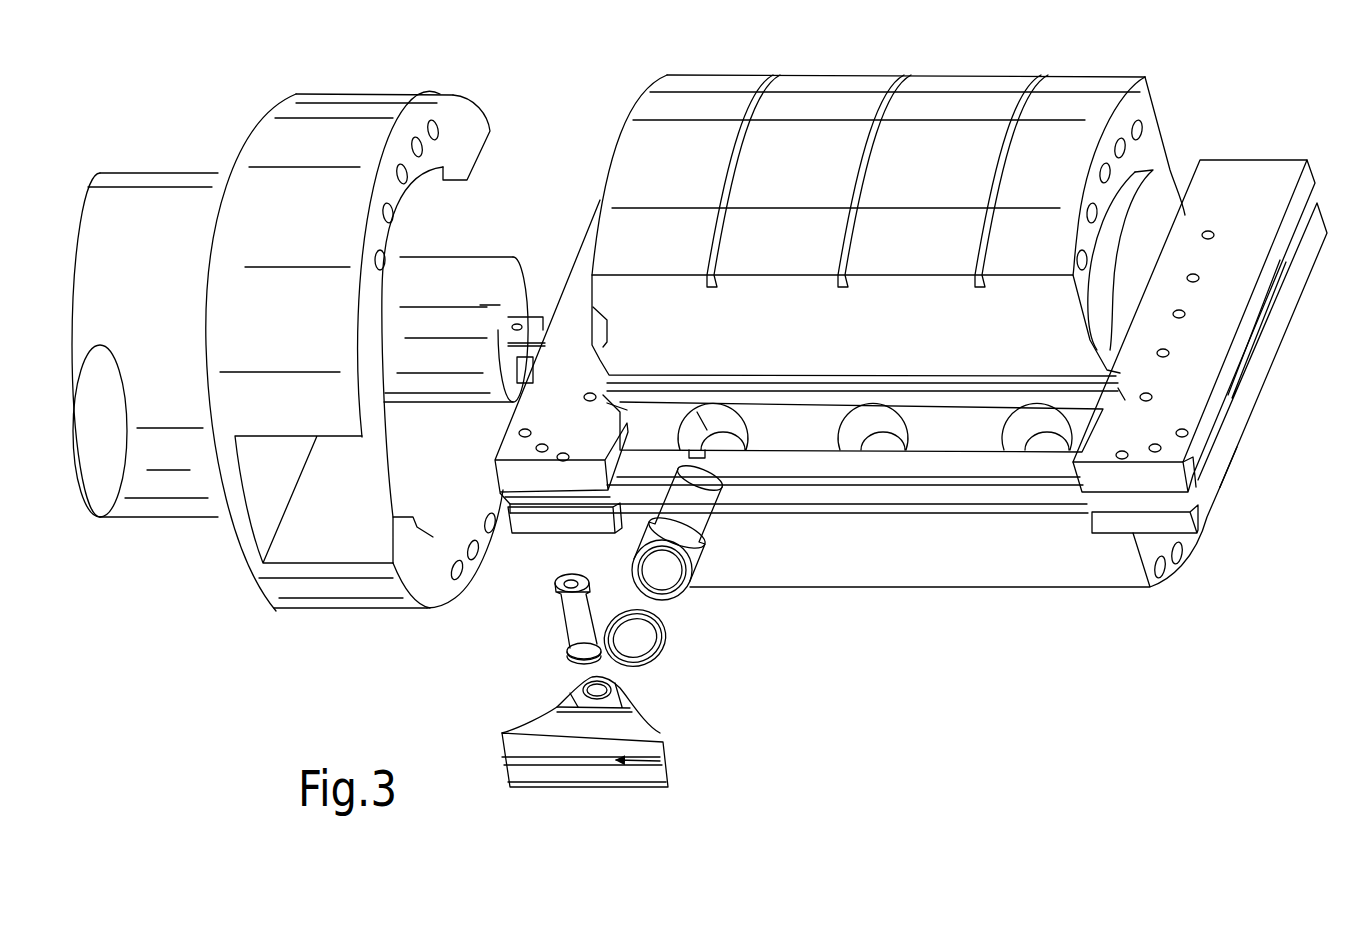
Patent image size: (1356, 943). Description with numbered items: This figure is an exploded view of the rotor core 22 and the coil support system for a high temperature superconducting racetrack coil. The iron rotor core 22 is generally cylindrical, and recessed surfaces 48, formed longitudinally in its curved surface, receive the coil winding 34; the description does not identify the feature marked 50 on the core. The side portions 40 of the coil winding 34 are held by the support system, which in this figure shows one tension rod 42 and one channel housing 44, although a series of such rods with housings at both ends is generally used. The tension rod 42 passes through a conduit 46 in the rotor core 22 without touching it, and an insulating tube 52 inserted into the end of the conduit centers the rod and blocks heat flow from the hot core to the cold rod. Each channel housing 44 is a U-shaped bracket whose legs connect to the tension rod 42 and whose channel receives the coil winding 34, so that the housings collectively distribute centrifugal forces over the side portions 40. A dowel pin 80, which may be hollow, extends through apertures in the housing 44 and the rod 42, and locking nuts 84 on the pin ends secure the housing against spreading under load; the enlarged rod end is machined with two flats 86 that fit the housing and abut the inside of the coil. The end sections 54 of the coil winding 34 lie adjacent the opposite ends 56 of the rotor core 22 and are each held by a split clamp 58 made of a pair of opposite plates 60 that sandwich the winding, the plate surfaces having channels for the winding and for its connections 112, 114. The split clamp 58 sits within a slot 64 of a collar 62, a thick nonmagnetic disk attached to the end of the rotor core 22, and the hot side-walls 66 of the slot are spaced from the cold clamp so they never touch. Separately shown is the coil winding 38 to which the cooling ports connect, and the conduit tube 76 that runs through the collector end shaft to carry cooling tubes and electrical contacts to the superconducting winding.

The rotor core 22 is at (885, 225).
The coil winding 34 is at (1005, 468).
The coil winding 38 is at (1010, 500).
The side portions of the coil winding 40 is at (853, 530).
The tension rod 42 is at (713, 452).
The channel housing 44 is at (669, 775).
The conduit 46 is at (890, 438).
The recessed surface 48 is at (839, 340).
The upper housing face 50 is at (826, 231).
The insulating tube 52 is at (672, 603).
The end section of the coil winding 54 is at (1198, 483).
The end of the rotor core 56 is at (636, 126).
The split clamp 58 is at (523, 530).
The clamp plate 60 is at (1250, 177).
The collar 62 is at (325, 353).
The slot 64 is at (261, 503).
The side-wall of the slot 66 is at (296, 444).
The conduit tube 76 is at (452, 327).
The dowel pin 80 is at (557, 621).
The locking nut 84 is at (663, 660).
The flat 86 is at (692, 497).
The connection to the winding 112 is at (512, 327).
The connection to the winding 114 is at (540, 325).